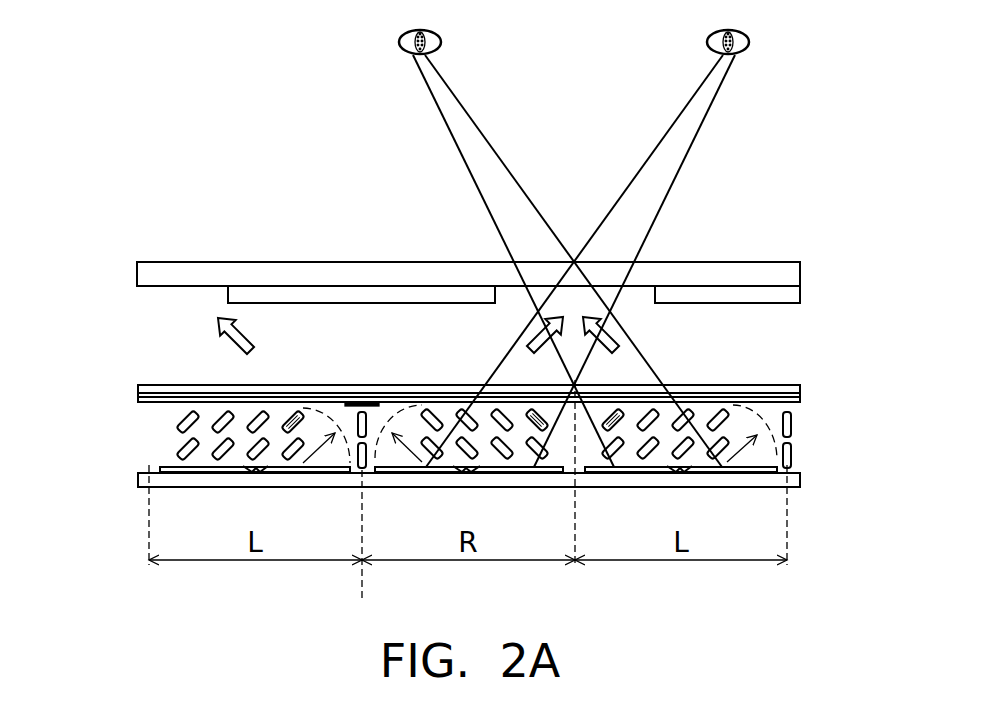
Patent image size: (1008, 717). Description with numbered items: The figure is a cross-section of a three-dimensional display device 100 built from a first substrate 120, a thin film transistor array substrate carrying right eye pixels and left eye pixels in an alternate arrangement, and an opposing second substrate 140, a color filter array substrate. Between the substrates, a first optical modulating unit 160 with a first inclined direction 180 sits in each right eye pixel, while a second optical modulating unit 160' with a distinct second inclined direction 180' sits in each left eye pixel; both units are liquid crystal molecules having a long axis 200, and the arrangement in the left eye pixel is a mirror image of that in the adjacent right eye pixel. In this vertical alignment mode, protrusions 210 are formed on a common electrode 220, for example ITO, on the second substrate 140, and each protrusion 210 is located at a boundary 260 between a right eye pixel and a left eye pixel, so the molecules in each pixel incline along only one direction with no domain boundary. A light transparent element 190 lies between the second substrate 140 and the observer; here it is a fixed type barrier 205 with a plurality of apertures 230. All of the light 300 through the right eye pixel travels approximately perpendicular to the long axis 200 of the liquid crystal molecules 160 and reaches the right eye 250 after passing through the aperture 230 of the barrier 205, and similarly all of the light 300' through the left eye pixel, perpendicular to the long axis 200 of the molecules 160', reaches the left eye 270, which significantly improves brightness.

The 3D display device 100 is at (464, 404).
The first substrate 120 is at (138, 478).
The second substrate 140 is at (138, 390).
The first optical modulating unit 160 is at (470, 386).
The second optical modulating unit 160' is at (460, 386).
The first inclined direction 180 is at (408, 474).
The second inclined direction 180' is at (535, 474).
The light transparent element 190 is at (509, 311).
The long axis 200 is at (298, 413).
The barrier 205 is at (793, 303).
The protrusion 210 is at (363, 402).
The common electrode 220 is at (418, 427).
The aperture 230 is at (572, 296).
The right eye 250 is at (749, 42).
The boundary 260 is at (363, 586).
The left eye 270 is at (399, 42).
The light 300 is at (514, 333).
The light 300' is at (454, 333).